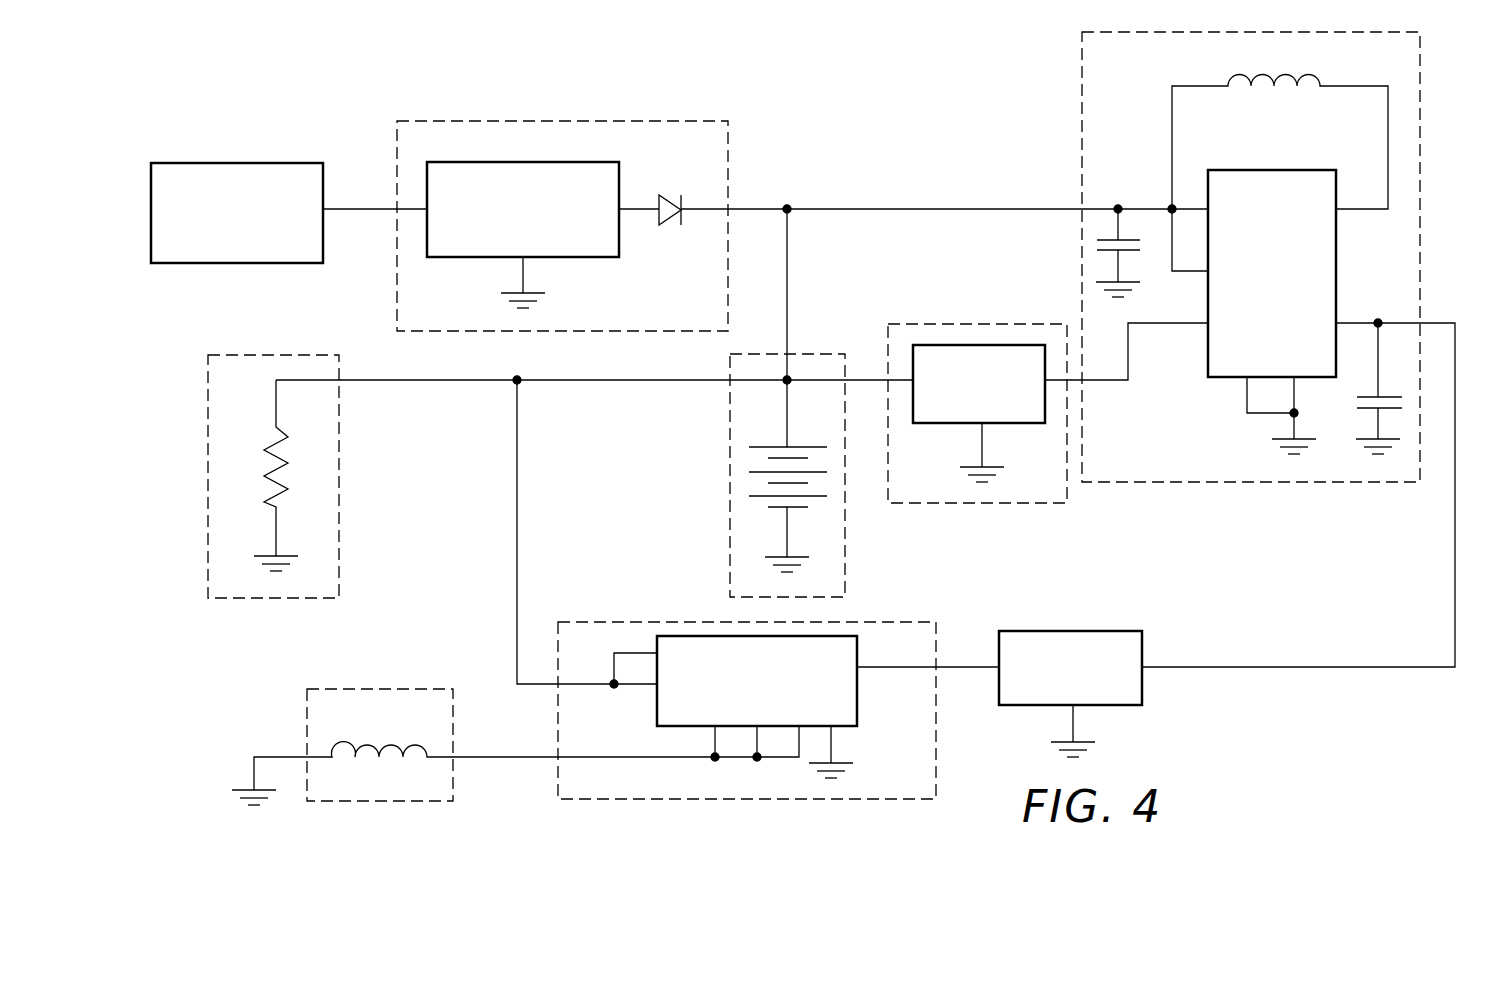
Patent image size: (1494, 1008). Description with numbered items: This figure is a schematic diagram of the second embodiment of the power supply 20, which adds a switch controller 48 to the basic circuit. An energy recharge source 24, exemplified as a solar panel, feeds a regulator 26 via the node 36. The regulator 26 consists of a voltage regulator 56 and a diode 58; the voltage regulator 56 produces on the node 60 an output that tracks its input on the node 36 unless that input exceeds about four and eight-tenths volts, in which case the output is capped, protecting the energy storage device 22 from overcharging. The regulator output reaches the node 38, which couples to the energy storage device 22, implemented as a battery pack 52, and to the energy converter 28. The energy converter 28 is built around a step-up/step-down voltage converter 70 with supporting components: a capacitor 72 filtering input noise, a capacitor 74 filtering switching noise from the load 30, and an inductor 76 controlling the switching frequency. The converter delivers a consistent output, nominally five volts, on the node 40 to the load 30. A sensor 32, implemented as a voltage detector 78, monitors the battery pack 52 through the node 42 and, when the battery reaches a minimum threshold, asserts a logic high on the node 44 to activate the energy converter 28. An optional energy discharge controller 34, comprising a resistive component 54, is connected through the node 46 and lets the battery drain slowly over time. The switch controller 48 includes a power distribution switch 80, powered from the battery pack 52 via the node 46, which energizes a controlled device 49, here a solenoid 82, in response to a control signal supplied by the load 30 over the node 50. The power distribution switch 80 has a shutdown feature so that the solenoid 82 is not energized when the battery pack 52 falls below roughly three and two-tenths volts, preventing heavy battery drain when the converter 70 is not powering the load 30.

The power supply 20 is at (921, 86).
The energy storage device 22 is at (730, 430).
The energy recharge source 24 is at (250, 163).
The regulator 26 is at (397, 309).
The energy converter 28 is at (1082, 163).
The load 30 is at (1142, 647).
The sensor 32 is at (920, 324).
The energy discharge controller 34 is at (339, 453).
The node 36 is at (364, 209).
The node 38 is at (758, 209).
The node 40 is at (1455, 592).
The node 42 is at (870, 380).
The node 44 is at (1100, 380).
The node 46 is at (517, 503).
The switch controller 48 is at (598, 622).
The controlled device 49 is at (377, 689).
The node 50 is at (962, 667).
The battery pack 52 is at (772, 507).
The resistive component 54 is at (265, 450).
The voltage regulator 56 is at (582, 257).
The diode 58 is at (664, 223).
The node 60 is at (637, 209).
The voltage converter 70 is at (1336, 268).
The capacitor 72 is at (1105, 240).
The capacitor 74 is at (1363, 408).
The inductor 76 is at (1318, 78).
The voltage detector 78 is at (977, 345).
The power distribution switch 80 is at (840, 636).
The solenoid 82 is at (378, 747).